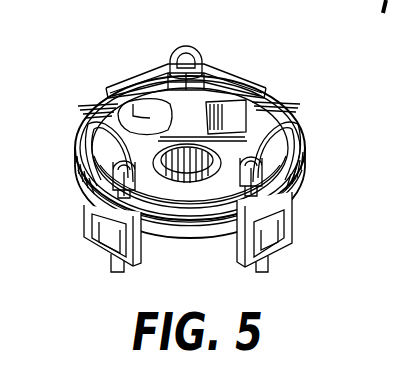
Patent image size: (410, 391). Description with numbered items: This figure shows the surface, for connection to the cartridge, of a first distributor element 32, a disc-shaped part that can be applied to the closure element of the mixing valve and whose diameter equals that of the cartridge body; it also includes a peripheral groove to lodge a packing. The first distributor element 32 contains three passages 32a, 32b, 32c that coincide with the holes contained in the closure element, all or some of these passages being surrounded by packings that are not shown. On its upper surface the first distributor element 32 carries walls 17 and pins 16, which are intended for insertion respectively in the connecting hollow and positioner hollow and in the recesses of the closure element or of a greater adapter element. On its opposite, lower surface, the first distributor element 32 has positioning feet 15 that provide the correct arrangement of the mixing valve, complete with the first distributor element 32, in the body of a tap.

The positioning feet 15 is at (112, 270).
The pins 16 is at (196, 48).
The walls 17 is at (138, 66).
The first distributor element 32 is at (76, 137).
The passage 32a is at (124, 112).
The passage 32b is at (250, 120).
The passage 32c is at (184, 172).